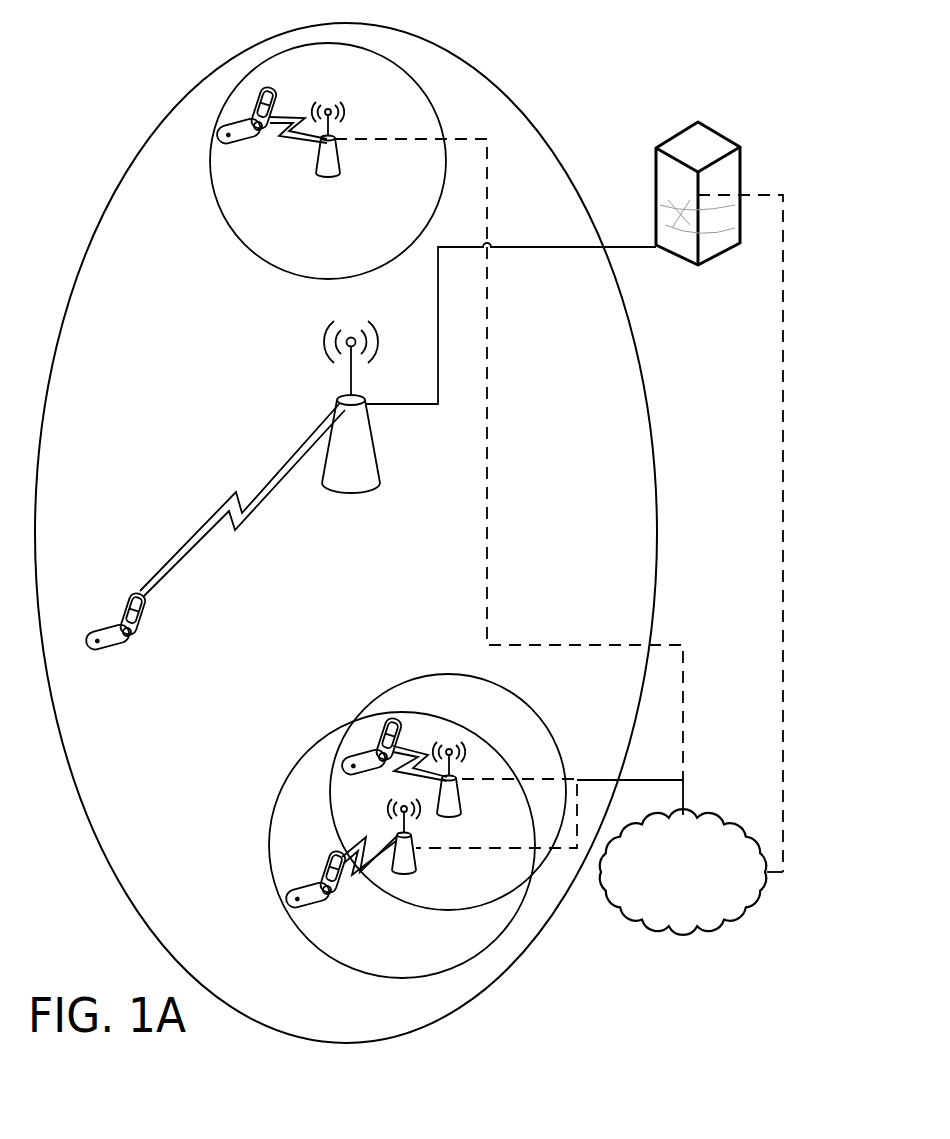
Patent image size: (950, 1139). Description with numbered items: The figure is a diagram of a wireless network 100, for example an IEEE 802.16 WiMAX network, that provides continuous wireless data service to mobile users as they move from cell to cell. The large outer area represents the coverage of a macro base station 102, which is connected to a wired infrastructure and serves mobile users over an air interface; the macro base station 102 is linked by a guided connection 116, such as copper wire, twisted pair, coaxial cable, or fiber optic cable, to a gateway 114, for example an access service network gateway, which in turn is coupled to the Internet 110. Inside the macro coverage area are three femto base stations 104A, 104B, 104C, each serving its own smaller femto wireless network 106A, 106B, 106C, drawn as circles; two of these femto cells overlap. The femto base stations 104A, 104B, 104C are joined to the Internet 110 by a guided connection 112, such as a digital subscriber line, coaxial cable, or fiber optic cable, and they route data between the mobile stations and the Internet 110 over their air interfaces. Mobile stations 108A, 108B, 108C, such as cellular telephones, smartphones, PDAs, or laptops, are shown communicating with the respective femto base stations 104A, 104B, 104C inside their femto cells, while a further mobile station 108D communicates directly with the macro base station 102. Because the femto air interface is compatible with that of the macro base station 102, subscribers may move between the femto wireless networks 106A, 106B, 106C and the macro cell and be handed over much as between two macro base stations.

The wireless network 100 is at (122, 176).
The macro base station 102 is at (351, 419).
The femto base station 104A is at (496, 795).
The femto base station 104B is at (405, 848).
The femto base station 104C is at (328, 151).
The femto wireless network 106A is at (412, 675).
The femto wireless network 106B is at (275, 887).
The femto wireless network 106C is at (220, 207).
The mobile station 108A is at (393, 756).
The mobile station 108B is at (340, 883).
The mobile station 108C is at (271, 127).
The mobile station 108D is at (214, 538).
The Internet 110 is at (683, 872).
The guided connection 112 is at (688, 792).
The gateway 114 is at (719, 497).
The guided connection 116 is at (633, 243).